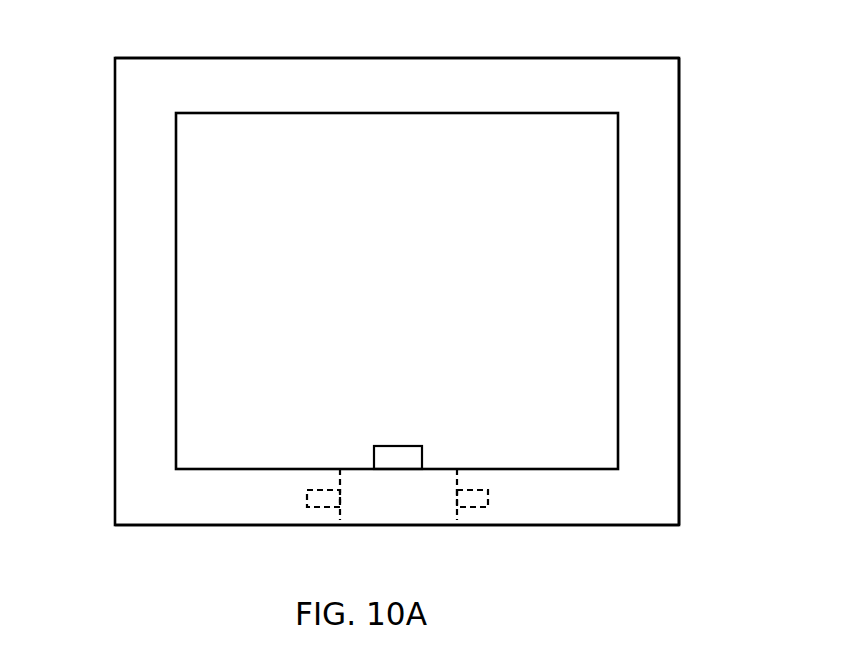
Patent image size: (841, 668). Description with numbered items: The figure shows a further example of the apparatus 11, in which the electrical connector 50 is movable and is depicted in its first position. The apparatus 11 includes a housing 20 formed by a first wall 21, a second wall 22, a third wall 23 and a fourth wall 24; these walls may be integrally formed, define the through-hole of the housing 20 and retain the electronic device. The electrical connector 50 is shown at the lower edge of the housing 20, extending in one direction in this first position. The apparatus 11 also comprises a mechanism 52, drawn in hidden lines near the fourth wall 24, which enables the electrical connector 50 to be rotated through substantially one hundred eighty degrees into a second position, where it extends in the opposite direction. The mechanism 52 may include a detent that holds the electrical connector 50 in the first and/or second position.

The housing 20 is at (98, 452).
The apparatus 11 is at (110, 533).
The second wall 22 is at (505, 75).
The third wall 23 is at (660, 277).
The first wall 21 is at (137, 310).
The electrical connector 50 is at (432, 450).
The mechanism 52 is at (323, 487).
The fourth wall 24 is at (482, 512).